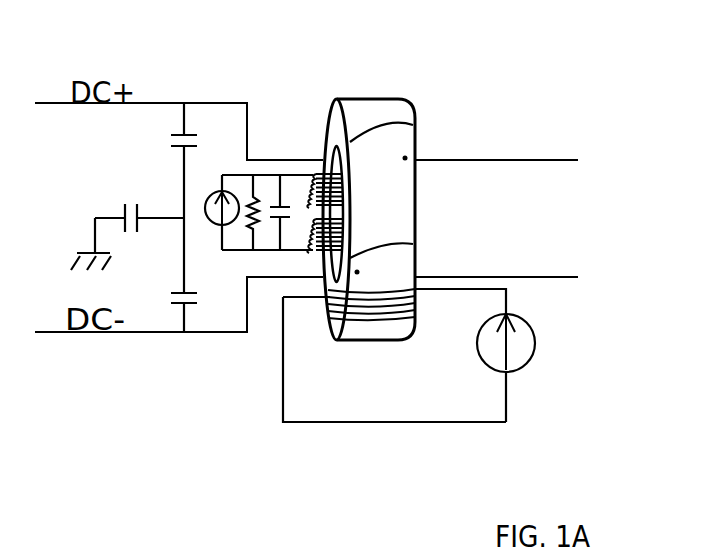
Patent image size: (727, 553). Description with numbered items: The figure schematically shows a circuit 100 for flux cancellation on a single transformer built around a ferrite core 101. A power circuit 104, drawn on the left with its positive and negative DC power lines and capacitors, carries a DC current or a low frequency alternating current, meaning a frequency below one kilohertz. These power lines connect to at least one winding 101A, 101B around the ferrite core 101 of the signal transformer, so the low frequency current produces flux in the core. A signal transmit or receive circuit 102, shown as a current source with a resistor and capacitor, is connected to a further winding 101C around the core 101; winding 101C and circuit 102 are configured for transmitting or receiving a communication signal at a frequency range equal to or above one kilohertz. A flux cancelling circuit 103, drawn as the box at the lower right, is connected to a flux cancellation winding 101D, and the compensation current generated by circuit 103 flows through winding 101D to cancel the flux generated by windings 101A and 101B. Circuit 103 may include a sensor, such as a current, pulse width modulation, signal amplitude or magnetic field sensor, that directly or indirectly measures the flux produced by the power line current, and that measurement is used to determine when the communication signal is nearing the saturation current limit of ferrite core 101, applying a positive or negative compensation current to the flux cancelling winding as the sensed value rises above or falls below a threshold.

The circuit 100 is at (190, 39).
The ferrite core 101 is at (368, 115).
The winding 101A is at (422, 148).
The winding 101B is at (422, 258).
The winding 101C is at (345, 262).
The flux cancellation winding 101D is at (417, 300).
The signal transmit or receive circuit 102 is at (272, 193).
The flux cancelling circuit 103 is at (330, 376).
The power circuit 104 is at (172, 253).